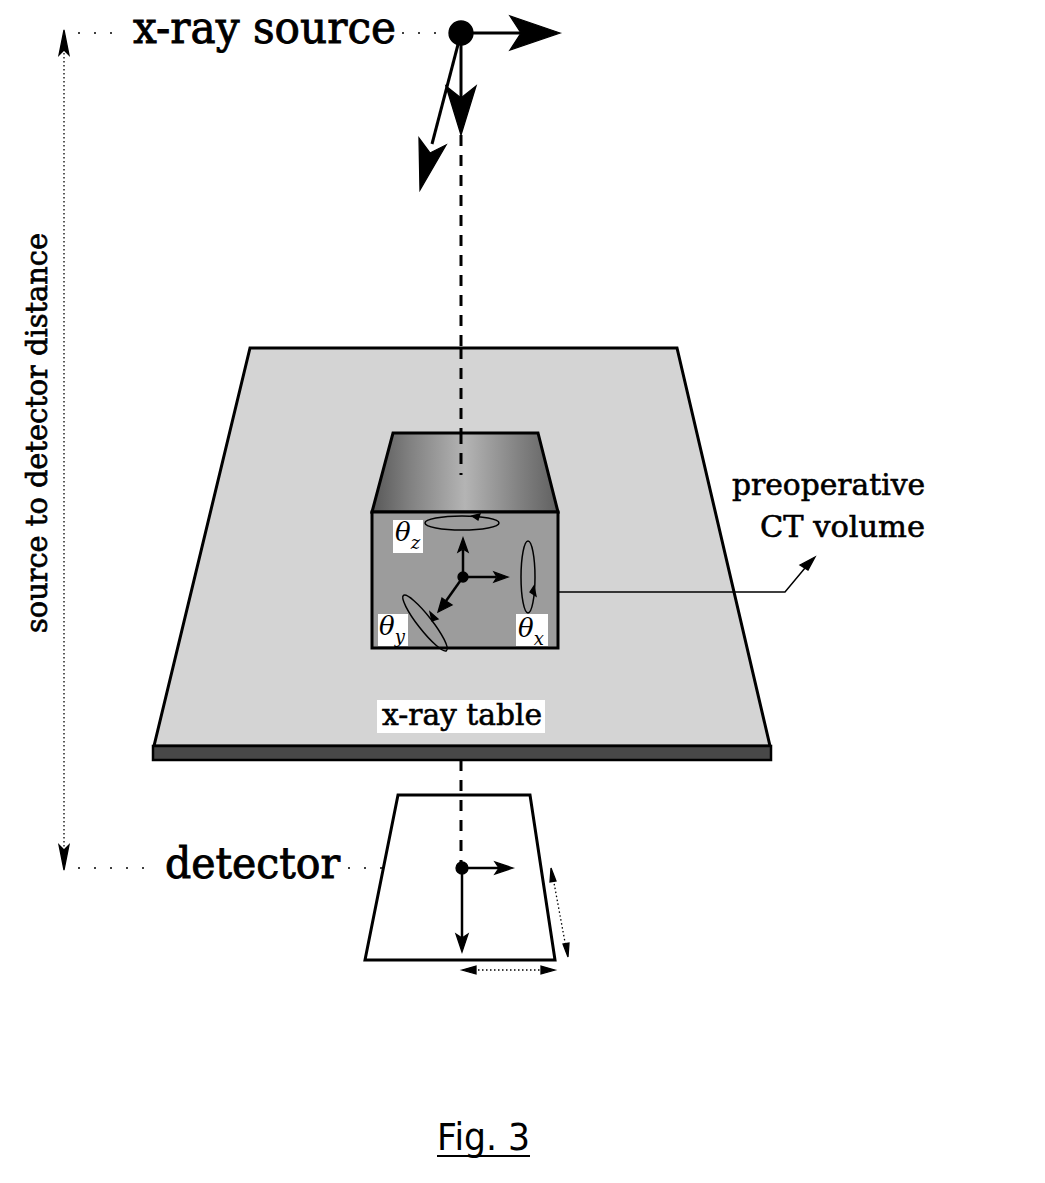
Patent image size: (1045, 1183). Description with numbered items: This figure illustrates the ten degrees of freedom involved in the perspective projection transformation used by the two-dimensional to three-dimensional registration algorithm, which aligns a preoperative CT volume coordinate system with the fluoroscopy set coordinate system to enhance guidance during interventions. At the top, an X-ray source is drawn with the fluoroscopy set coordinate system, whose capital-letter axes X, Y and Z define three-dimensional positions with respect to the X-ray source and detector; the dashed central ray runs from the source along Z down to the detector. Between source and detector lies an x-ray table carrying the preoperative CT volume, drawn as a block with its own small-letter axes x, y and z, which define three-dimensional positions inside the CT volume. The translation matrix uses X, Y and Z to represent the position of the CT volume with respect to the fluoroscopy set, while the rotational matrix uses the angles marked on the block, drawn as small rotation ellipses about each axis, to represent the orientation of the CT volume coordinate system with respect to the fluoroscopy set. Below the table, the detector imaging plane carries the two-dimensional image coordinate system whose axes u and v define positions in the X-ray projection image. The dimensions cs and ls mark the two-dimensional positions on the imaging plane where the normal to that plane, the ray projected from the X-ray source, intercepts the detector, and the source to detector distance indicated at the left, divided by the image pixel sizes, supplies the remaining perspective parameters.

The X coordinate axis X is at (520, 44).
The Y coordinate axis Y is at (426, 119).
The Z coordinate axis Z is at (470, 90).
The x coordinate axis x is at (487, 587).
The y coordinate axis y is at (439, 594).
The z coordinate axis z is at (473, 552).
The u image coordinate u is at (449, 910).
The v image coordinate v is at (488, 882).
The imaging plane intercept coordinate l_s ls is at (570, 912).
The imaging plane intercept coordinate c_s cs is at (508, 988).